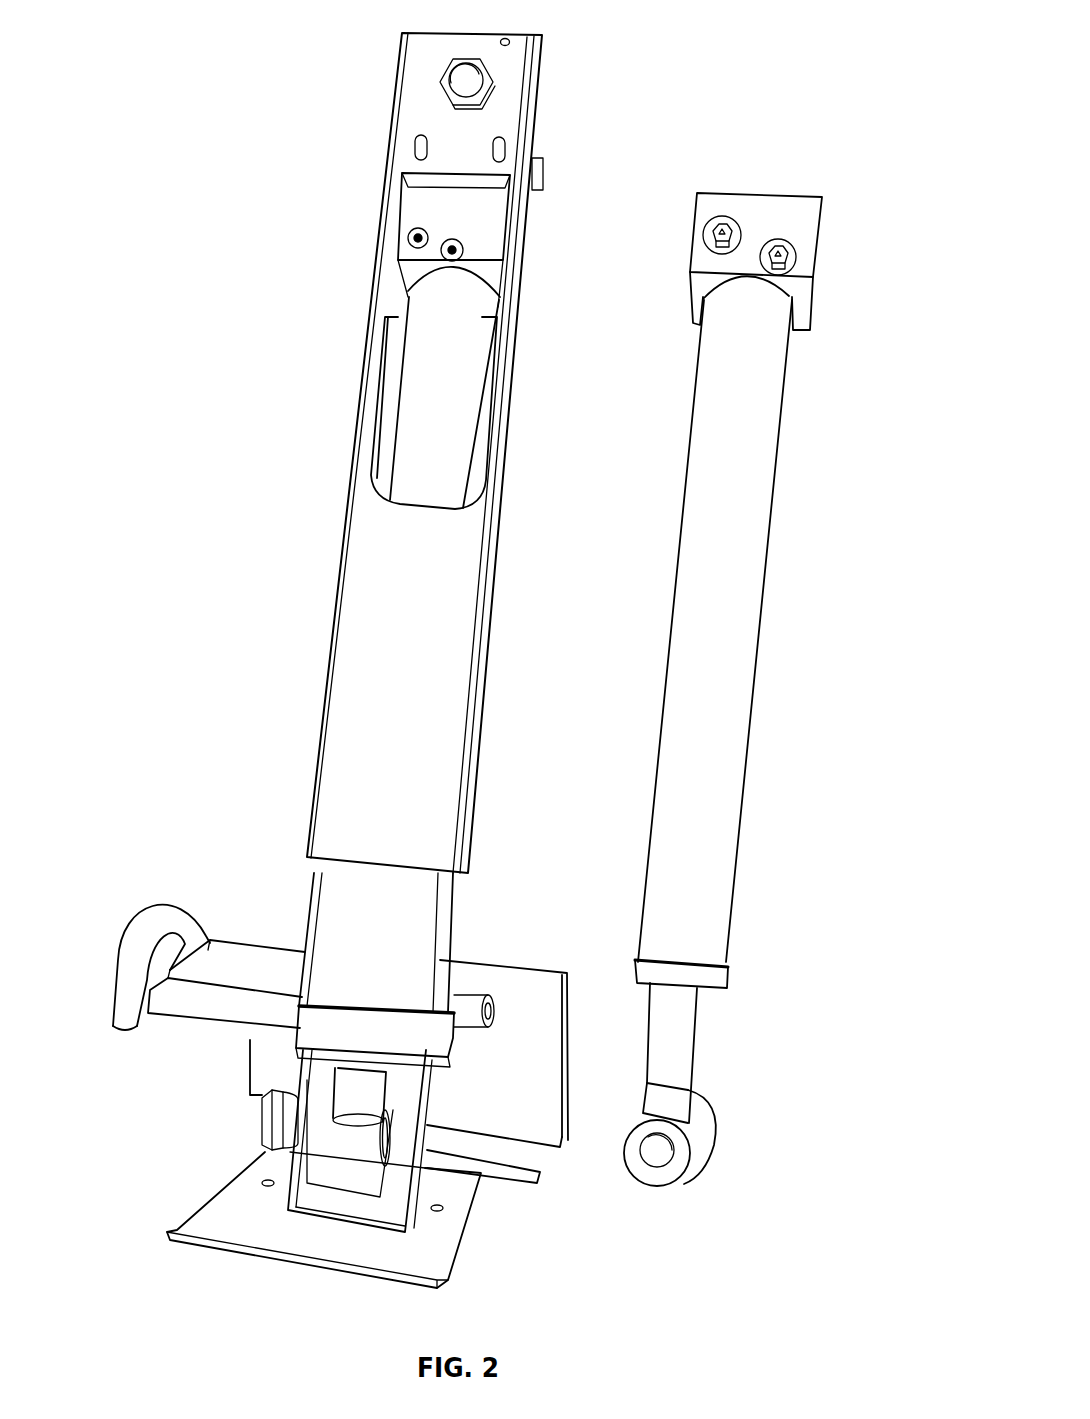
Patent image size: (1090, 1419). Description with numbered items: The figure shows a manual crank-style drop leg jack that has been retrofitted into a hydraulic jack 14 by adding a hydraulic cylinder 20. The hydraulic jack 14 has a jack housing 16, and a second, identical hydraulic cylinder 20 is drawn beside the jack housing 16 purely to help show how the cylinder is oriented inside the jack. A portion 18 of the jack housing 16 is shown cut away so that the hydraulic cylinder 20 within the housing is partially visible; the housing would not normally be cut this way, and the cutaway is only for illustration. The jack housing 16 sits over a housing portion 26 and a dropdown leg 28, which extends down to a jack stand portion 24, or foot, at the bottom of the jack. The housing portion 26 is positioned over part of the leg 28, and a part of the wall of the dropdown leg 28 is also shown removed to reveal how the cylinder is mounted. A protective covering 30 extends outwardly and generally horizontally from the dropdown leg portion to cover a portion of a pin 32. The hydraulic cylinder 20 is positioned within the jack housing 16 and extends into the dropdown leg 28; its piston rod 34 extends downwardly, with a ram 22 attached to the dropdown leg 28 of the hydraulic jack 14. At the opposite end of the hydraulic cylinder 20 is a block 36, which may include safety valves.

The hydraulic jack 14 is at (731, 34).
The jack housing 16 is at (407, 122).
The cut-away portion of the jack housing 18 is at (385, 383).
The hydraulic cylinder 20 is at (410, 442).
The ram 22 is at (323, 1112).
The jack stand portion 24 is at (448, 1228).
The housing portion 26 is at (330, 904).
The dropdown leg 28 is at (282, 1200).
The protective covering 30 is at (247, 967).
The pin 32 is at (146, 922).
The piston rod 34 is at (379, 1076).
The block 36 is at (414, 215).